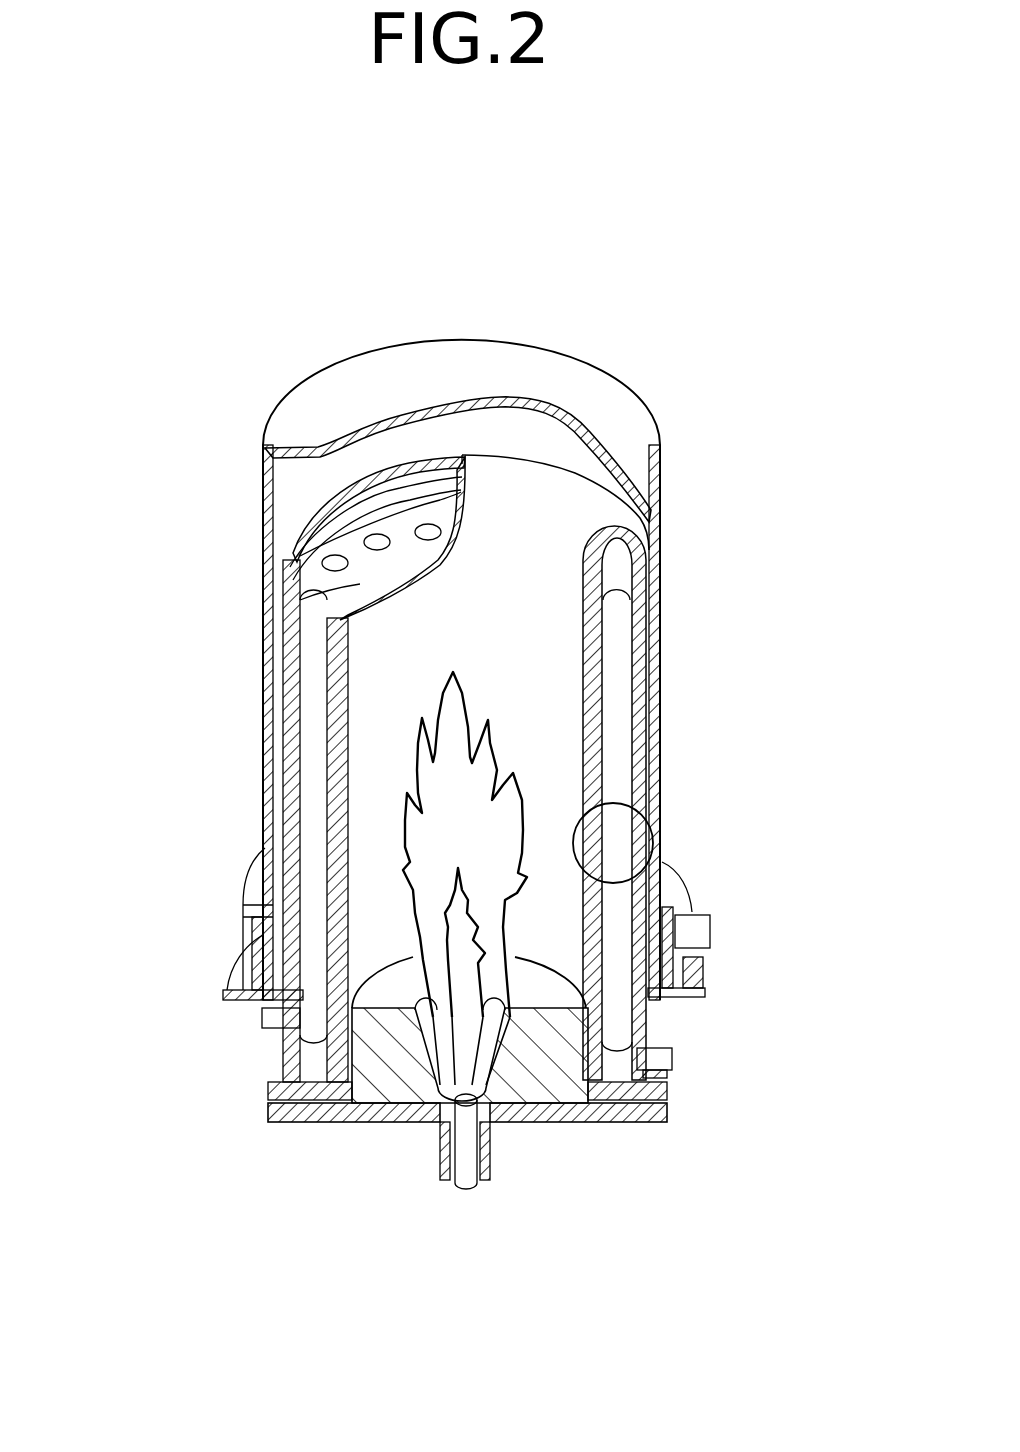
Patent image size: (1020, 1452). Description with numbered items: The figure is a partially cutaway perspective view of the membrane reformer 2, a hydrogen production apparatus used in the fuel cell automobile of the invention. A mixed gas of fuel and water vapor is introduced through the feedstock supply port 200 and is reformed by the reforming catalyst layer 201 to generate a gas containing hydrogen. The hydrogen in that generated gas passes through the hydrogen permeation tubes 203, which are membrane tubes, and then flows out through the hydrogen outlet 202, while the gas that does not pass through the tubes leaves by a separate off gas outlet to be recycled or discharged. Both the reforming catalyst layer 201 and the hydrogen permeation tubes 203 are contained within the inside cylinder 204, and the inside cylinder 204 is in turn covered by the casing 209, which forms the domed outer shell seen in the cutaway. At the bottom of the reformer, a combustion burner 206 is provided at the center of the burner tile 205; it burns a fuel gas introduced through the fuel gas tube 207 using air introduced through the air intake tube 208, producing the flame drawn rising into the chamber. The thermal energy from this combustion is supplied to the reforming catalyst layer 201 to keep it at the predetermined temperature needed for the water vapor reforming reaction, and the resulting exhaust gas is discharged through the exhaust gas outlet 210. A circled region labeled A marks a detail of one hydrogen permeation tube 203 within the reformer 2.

The membrane reformer 2 is at (595, 350).
The casing 209 is at (352, 382).
The inside cylinder 204 is at (578, 512).
The reforming catalyst layer 201 is at (300, 568).
The hydrogen permeation tubes 203 is at (627, 586).
The detail region A is at (642, 815).
The exhaust gas outlet 210 is at (694, 922).
The hydrogen outlet 202 is at (660, 1055).
The feedstock supply port 200 is at (284, 1030).
The burner tile 205 is at (555, 1072).
The combustion burner 206 is at (543, 1123).
The fuel gas tube 207 is at (470, 1135).
The air intake tube 208 is at (462, 1188).